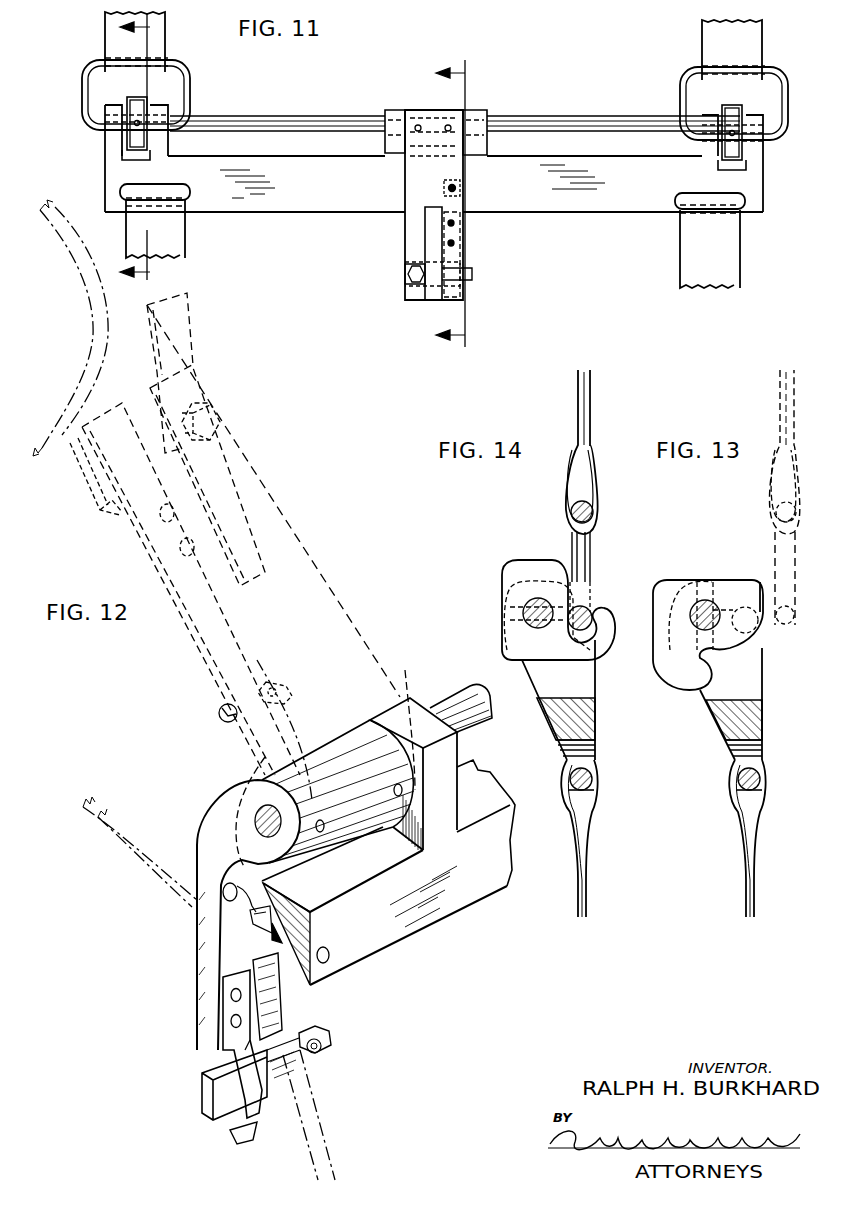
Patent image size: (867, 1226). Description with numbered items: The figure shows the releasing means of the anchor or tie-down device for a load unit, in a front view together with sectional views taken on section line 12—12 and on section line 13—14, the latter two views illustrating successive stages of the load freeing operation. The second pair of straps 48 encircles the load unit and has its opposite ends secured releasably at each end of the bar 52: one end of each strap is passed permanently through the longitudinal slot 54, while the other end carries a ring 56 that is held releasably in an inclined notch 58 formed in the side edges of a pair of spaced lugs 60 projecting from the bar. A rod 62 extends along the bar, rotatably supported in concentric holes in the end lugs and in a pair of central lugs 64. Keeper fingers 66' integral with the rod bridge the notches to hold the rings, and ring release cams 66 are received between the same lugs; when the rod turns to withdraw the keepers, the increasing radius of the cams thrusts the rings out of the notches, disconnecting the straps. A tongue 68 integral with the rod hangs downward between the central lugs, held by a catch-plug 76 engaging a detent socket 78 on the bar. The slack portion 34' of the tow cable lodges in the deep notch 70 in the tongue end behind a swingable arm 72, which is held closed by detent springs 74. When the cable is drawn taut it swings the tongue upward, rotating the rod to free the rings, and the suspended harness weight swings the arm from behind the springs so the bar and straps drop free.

In FIG. 11, the section line 12— 12 is at (462, 206).
In FIG. 11, the section line 13—14 13 is at (144, 148).
In FIG. 11, the section line 13— 14 is at (157, 162).
In FIG. 12, the slack portion of cable 34' is at (209, 690).
In FIG. 11, the straps 48 is at (108, 21).
In FIG. 14, the straps 48 is at (578, 384).
In FIG. 13, the straps 48 is at (780, 384).
In FIG. 11, the bar 52 is at (312, 198).
In FIG. 12, the bar 52 is at (422, 948).
In FIG. 11, the slot 54 is at (172, 184).
In FIG. 14, the slot 54 is at (598, 752).
In FIG. 13, the slot 54 is at (728, 755).
In FIG. 11, the ring 56 is at (192, 88).
In FIG. 14, the ring 56 is at (572, 544).
In FIG. 13, the ring 56 is at (778, 545).
In FIG. 13, the notch 58 is at (740, 614).
In FIG. 11, the lugs 60 is at (107, 138).
In FIG. 14, the lugs 60 is at (586, 676).
In FIG. 13, the lugs 60 is at (752, 667).
In FIG. 11, the rod 62 is at (258, 124).
In FIG. 12, the rod 62 is at (470, 696).
In FIG. 14, the rod 62 is at (528, 624).
In FIG. 13, the rod 62 is at (696, 622).
In FIG. 11, the central lugs 64 is at (393, 110).
In FIG. 12, the central lugs 64 is at (448, 790).
In FIG. 11, the ring release cams 66 is at (427, 121).
In FIG. 14, the ring release cams 66 is at (537, 606).
In FIG. 13, the ring release cams 66 is at (700, 620).
In FIG. 14, the keeper fingers 66' is at (604, 603).
In FIG. 13, the keeper fingers 66' is at (682, 691).
In FIG. 12, the tongue 68 is at (200, 828).
In FIG. 11, the notch 70 is at (430, 246).
In FIG. 12, the notch 70 is at (228, 468).
In FIG. 11, the swingable arm 72 is at (474, 273).
In FIG. 12, the swingable arm 72 is at (195, 330).
In FIG. 11, the detent springs 74 is at (460, 232).
In FIG. 12, the detent springs 74 is at (90, 495).
In FIG. 11, the catch-plug 76 is at (446, 187).
In FIG. 12, the catch-plug 76 is at (223, 710).
In FIG. 11, the detent socket 78 is at (454, 178).
In FIG. 12, the detent socket 78 is at (264, 934).